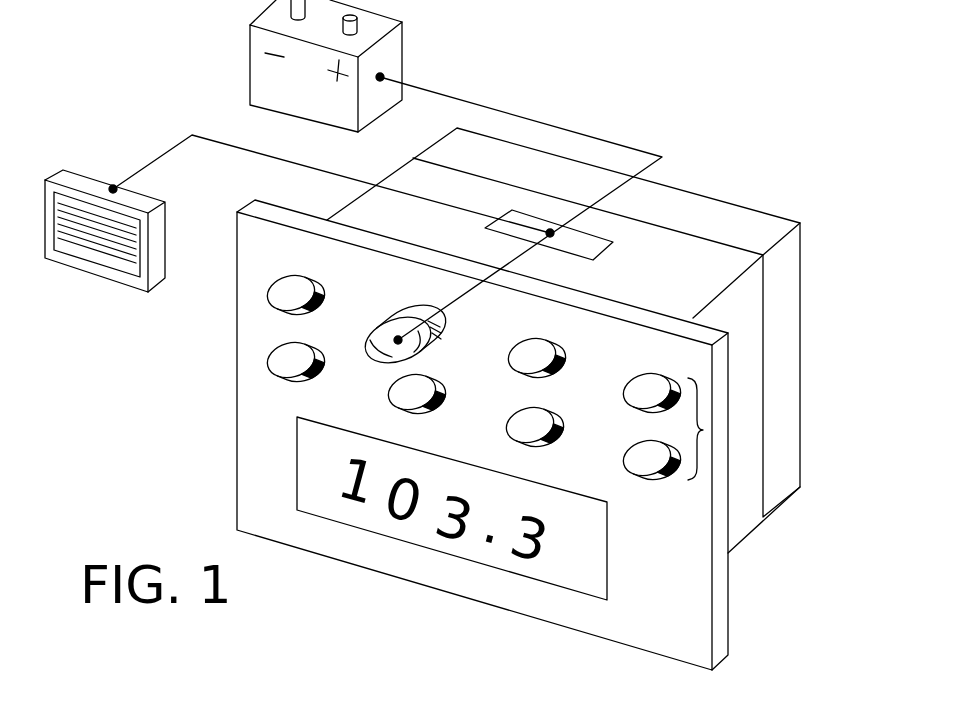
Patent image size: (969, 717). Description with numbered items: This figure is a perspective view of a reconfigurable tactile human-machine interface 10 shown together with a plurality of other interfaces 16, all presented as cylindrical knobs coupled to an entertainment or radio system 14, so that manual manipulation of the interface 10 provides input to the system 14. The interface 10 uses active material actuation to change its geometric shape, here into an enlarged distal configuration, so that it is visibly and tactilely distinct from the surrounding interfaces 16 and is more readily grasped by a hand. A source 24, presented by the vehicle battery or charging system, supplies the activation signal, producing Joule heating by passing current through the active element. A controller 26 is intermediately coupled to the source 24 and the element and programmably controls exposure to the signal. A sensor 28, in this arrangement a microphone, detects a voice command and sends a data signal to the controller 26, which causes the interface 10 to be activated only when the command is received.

The reconfigurable tactile human-machine interface 10 is at (364, 331).
The system 14 is at (725, 285).
The plurality of interfaces 16 is at (703, 430).
The source 24 is at (263, 60).
The controller 26 is at (611, 243).
The sensor 28 is at (63, 172).